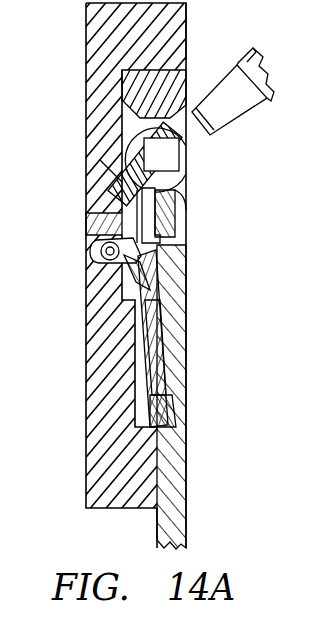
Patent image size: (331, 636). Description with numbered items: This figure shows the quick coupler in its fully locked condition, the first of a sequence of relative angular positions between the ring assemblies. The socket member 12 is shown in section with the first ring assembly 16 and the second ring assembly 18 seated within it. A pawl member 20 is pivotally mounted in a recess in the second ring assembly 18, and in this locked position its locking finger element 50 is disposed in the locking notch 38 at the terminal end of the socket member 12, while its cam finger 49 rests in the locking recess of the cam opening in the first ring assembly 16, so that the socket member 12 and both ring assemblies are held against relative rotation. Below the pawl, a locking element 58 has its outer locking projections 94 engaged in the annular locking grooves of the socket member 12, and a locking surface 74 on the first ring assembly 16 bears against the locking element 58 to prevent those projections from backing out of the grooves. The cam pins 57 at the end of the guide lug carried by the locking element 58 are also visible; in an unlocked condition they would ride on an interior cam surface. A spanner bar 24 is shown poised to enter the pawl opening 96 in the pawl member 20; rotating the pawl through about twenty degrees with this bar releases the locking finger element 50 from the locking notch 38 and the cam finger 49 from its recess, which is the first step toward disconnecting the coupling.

The socket member 12 is at (187, 485).
The first ring assembly 16 is at (187, 28).
The second ring assembly 18 is at (186, 84).
The pawl member 20 is at (173, 187).
The spanner bar 24 is at (228, 105).
The locking notch 38 is at (177, 247).
The cam finger 49 is at (100, 160).
The locking finger element 50 is at (175, 230).
The cam pins 57 is at (101, 251).
The locking element 58 is at (143, 370).
The locking surface 74 is at (158, 413).
The locking projections 94 is at (160, 333).
The pawl opening 96 is at (173, 150).